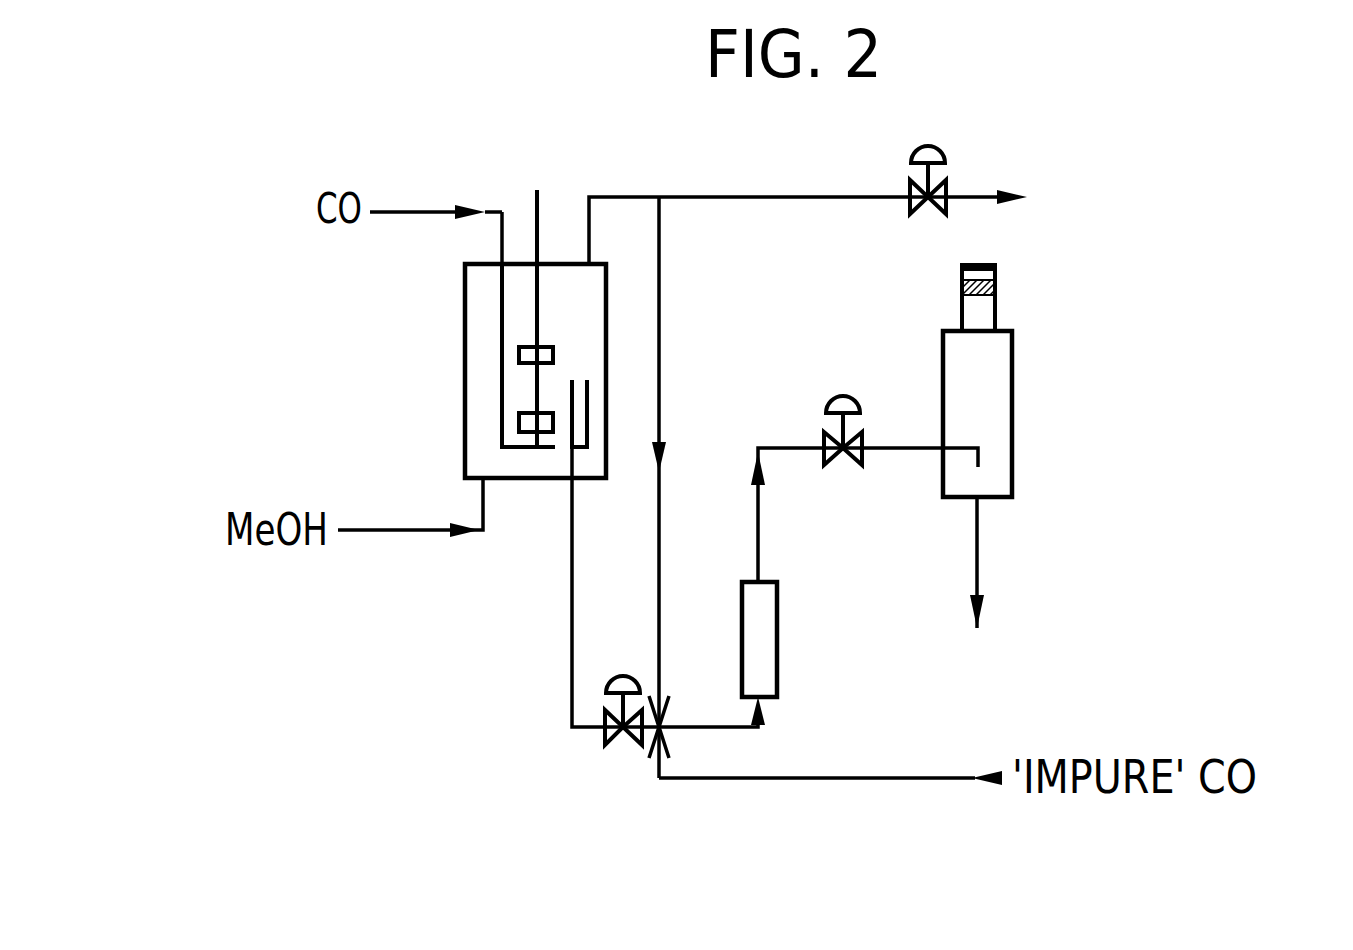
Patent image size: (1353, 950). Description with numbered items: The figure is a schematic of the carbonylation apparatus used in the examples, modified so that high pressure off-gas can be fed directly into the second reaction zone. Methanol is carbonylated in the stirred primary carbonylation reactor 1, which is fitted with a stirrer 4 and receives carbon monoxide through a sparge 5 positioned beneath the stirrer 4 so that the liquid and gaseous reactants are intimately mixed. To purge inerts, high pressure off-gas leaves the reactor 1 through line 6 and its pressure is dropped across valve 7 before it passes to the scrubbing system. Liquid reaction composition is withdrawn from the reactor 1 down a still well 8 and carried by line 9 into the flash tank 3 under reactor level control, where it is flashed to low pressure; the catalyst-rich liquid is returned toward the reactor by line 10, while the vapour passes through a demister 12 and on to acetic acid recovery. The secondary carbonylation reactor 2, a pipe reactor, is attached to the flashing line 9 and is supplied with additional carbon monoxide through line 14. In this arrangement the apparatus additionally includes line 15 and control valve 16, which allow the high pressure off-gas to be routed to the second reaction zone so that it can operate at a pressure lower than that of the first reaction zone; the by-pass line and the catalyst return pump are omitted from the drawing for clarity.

The primary carbonylation reactor 1 is at (465, 418).
The secondary carbonylation reactor 2 is at (778, 648).
The flash tank 3 is at (1013, 383).
The stirrer 4 is at (537, 325).
The sparge 5 is at (541, 448).
The line 6 is at (627, 197).
The valve 7 is at (940, 147).
The still well 8 is at (588, 416).
The line 9 is at (897, 448).
The line 10 is at (978, 608).
The demister 12 is at (996, 290).
The line 14 is at (693, 778).
The line 15 is at (660, 300).
The control valve 16 is at (612, 677).